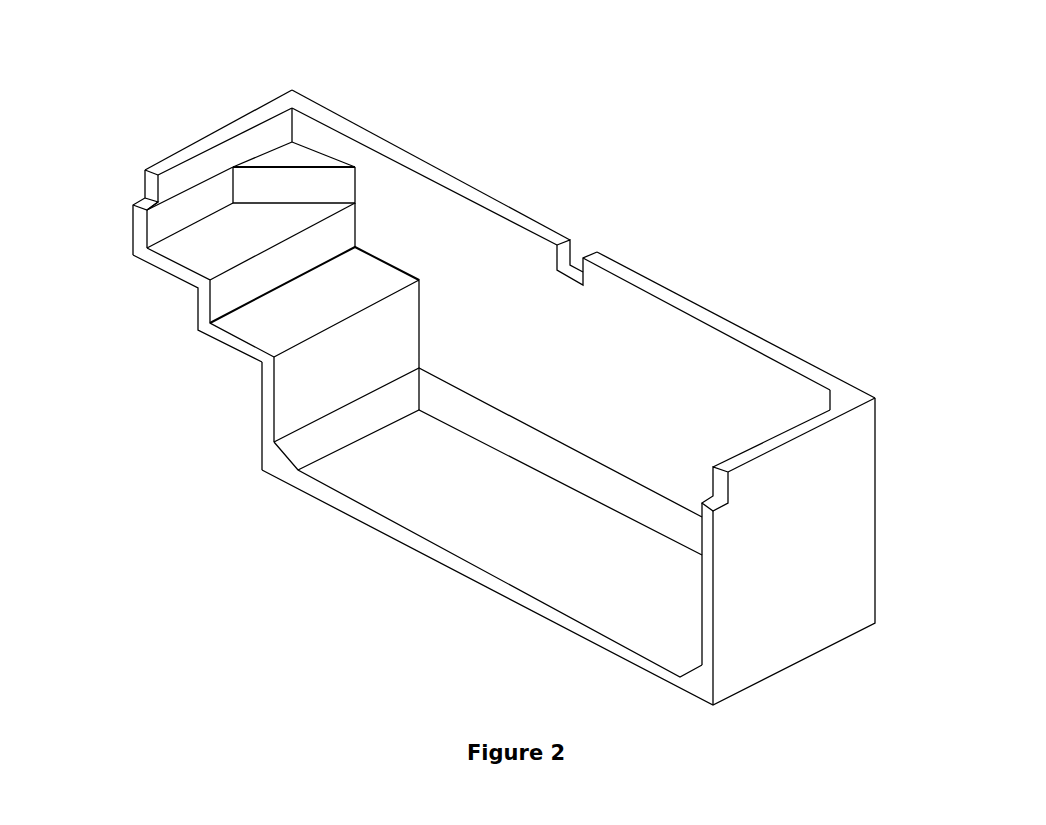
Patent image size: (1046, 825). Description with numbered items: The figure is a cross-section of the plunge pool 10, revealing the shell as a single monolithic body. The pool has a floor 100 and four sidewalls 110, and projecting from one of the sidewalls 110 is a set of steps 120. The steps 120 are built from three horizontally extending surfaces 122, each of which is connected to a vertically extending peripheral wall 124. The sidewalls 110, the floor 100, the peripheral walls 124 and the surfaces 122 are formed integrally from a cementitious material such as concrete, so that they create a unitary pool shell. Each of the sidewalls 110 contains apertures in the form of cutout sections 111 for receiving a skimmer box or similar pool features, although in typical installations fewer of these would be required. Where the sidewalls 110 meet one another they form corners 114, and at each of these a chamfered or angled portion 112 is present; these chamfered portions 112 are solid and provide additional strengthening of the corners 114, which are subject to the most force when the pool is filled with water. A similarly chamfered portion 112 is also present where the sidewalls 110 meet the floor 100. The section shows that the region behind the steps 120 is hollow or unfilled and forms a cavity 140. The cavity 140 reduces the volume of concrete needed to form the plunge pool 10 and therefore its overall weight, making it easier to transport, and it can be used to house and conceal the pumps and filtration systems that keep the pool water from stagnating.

The plunge pool 10 is at (740, 151).
The floor 100 is at (415, 513).
The sidewalls 110 is at (240, 142).
The cutout sections 111 is at (593, 229).
The chamfered or angled portion 112 is at (292, 102).
The corners 114 is at (277, 82).
The steps 120 is at (165, 227).
The horizontally extending surfaces 122 is at (337, 268).
The vertically extending peripheral wall 124 is at (308, 370).
The cavity 140 is at (165, 338).